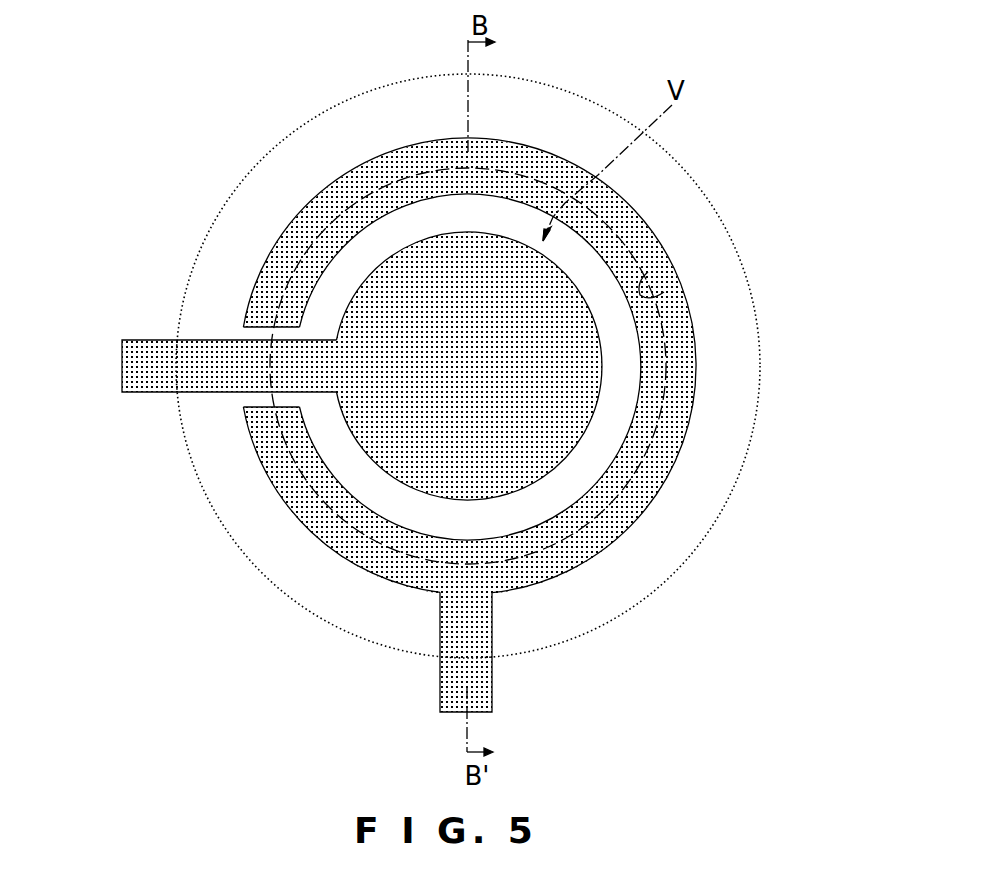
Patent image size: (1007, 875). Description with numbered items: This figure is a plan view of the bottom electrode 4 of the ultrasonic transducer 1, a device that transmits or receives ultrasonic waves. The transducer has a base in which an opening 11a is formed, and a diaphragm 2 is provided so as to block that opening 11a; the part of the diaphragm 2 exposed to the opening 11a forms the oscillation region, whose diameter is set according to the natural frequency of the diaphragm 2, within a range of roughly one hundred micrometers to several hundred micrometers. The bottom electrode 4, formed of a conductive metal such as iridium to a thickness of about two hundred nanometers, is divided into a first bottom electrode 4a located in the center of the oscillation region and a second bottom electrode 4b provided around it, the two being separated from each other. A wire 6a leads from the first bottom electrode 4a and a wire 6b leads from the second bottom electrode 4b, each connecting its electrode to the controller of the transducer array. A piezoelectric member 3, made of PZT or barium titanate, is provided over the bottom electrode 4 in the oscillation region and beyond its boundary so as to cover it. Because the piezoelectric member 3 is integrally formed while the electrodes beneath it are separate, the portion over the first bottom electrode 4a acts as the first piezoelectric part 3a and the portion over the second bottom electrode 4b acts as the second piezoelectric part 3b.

The ultrasonic transducer 1 is at (743, 95).
The diaphragm 2 is at (243, 122).
The piezoelectric member 3 is at (728, 224).
The first piezoelectric part 3a is at (382, 443).
The second piezoelectric part 3b is at (382, 563).
The bottom electrode 4 is at (808, 350).
The first bottom electrode 4a is at (588, 355).
The second bottom electrode 4b is at (672, 400).
The wire 6a is at (145, 382).
The wire 6b is at (483, 683).
The opening 11a is at (652, 296).